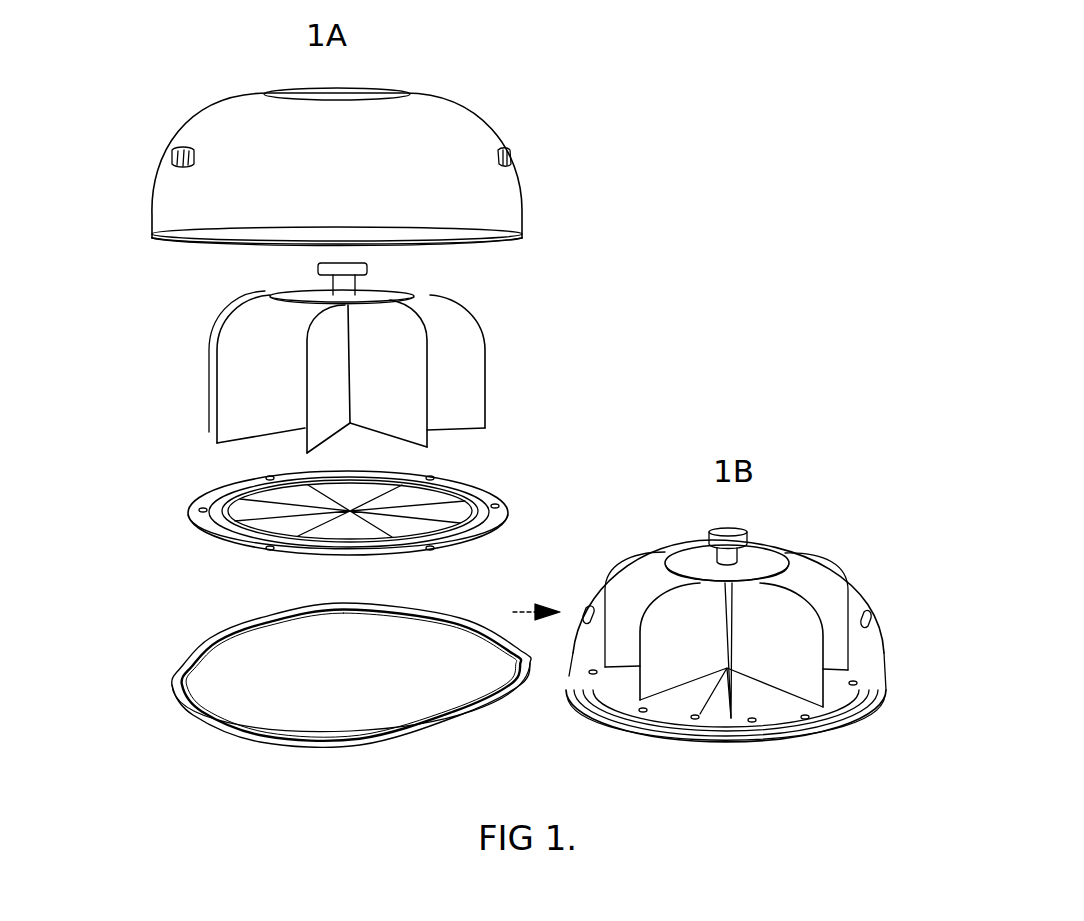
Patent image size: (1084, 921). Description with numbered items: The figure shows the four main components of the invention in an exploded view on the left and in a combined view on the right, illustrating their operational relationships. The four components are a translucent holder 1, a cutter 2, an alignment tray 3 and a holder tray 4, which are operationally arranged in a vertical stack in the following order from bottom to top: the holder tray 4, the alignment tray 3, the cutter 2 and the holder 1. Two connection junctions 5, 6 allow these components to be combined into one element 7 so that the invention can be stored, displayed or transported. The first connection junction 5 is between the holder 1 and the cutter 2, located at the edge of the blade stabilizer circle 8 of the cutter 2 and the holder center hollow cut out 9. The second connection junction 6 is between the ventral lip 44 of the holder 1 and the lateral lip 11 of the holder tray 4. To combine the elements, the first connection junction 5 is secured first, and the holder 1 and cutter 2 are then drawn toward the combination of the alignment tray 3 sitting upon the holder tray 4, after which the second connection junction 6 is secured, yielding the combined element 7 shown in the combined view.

The translucent holder 1 is at (532, 160).
The holder center hollow cut out 9 is at (348, 95).
The ventral lip 44 is at (517, 240).
The cutter 2 is at (503, 395).
The blade stabilizer circle 8 is at (374, 292).
The alignment tray 3 is at (512, 503).
The holder tray 4 is at (157, 678).
The lateral lip 11 is at (197, 663).
The combined element 7 is at (840, 560).
The first connection junction 5 is at (785, 563).
The second connection junction 6 is at (862, 707).